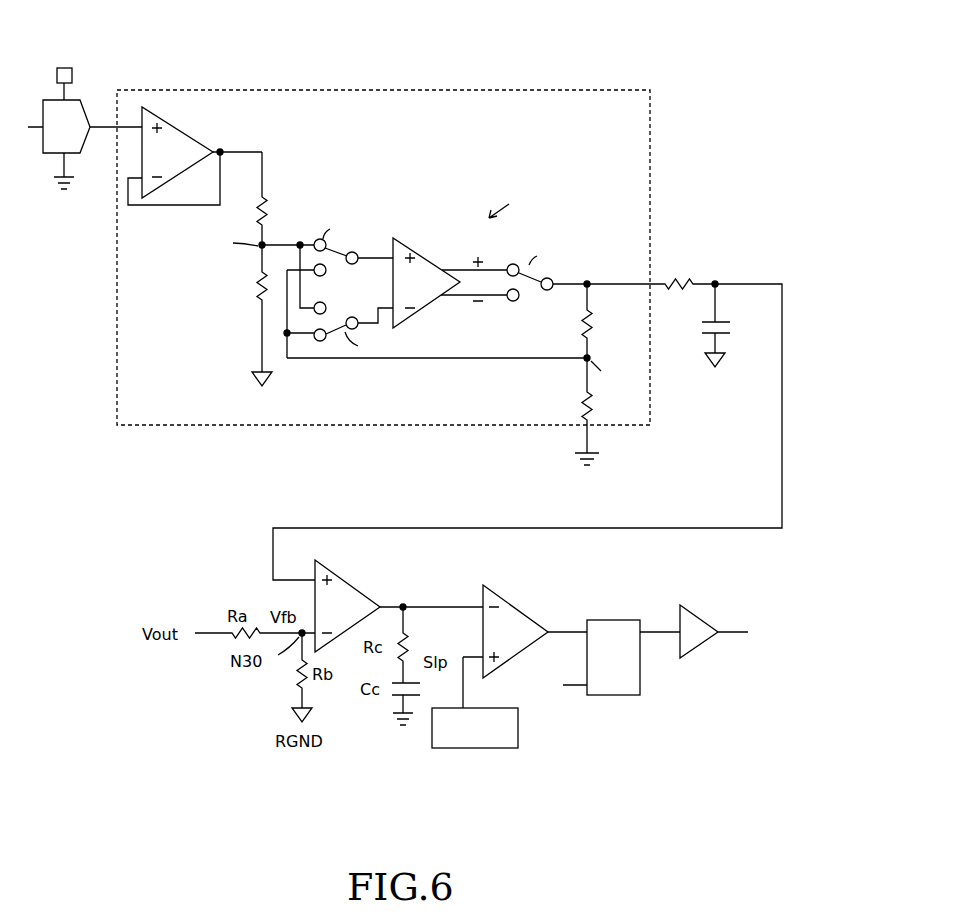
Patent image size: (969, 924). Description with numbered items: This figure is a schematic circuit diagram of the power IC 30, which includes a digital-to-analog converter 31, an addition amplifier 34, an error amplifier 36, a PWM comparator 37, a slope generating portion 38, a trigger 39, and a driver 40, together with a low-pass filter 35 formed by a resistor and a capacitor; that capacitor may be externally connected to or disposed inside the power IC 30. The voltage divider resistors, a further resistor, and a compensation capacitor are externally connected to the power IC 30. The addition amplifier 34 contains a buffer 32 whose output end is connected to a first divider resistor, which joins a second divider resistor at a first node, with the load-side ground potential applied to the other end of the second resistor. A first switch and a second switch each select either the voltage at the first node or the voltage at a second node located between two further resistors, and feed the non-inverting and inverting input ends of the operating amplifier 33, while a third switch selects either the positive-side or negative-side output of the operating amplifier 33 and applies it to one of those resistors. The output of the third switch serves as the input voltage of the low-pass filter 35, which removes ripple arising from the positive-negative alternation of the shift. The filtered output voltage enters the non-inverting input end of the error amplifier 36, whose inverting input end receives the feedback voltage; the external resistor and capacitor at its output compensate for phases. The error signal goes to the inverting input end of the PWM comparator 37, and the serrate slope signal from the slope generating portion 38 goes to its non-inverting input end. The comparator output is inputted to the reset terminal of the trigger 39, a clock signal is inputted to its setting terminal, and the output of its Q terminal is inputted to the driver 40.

The power IC 30 is at (723, 46).
The DAC 31 is at (82, 108).
The buffer 32 is at (182, 134).
The operating amplifier 33 is at (413, 250).
The addition amplifier 34 is at (543, 90).
The LPF 35 is at (732, 250).
The error amplifier 36 is at (341, 578).
The PWM comparator 37 is at (503, 599).
The slope generating portion 38 is at (518, 714).
The trigger 39 is at (627, 620).
The driver 40 is at (693, 611).